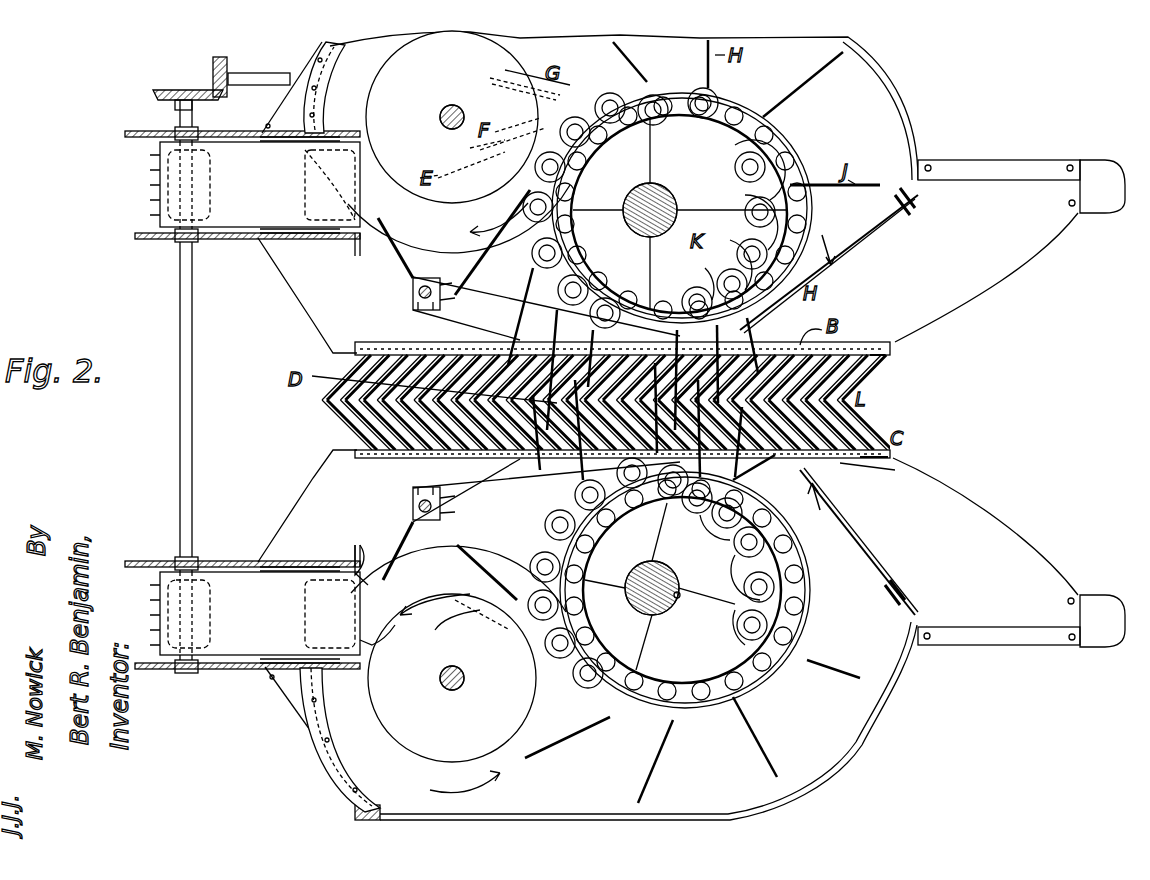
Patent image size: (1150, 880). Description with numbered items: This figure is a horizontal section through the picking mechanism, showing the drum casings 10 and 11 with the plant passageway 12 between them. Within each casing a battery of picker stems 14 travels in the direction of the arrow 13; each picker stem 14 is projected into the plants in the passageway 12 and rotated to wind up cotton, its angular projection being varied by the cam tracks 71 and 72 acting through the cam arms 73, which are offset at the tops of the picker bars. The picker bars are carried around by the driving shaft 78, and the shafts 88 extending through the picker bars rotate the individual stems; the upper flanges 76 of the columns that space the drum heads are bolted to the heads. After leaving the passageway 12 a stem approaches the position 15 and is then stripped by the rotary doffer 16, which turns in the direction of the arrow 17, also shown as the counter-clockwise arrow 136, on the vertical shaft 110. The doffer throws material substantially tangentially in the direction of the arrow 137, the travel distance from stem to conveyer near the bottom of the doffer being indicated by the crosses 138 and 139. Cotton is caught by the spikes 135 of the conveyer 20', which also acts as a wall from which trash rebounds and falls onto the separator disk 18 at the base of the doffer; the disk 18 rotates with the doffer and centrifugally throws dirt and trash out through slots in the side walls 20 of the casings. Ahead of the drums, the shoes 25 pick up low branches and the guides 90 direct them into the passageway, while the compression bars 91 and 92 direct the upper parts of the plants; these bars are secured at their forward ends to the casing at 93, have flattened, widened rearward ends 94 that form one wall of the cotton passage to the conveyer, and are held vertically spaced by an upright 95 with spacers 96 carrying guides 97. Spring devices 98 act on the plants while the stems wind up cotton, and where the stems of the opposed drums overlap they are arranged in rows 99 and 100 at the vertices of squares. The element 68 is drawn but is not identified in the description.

The drum casing 10 is at (905, 100).
The drum casing 11 is at (880, 738).
The passageway 12 is at (893, 402).
The arrow 13 is at (834, 250).
The picker stem 14 is at (815, 80).
The position 15 is at (478, 262).
The rotary doffer 16 is at (452, 396).
The arrow 17 is at (430, 787).
The separator disk 18 is at (320, 50).
The side walls 20 is at (378, 431).
The conveyer 20' is at (255, 398).
The shoes 25 is at (1098, 215).
The rollers 68 is at (760, 125).
The cam track 71 is at (800, 140).
The cam track 72 is at (735, 120).
The cam arms 73 is at (715, 140).
The upper flange 76 is at (668, 98).
The driving shaft 78 is at (660, 197).
The shafts 88 is at (745, 590).
The guides 90 is at (1000, 278).
The compression bar 91 is at (858, 283).
The compression bar 92 is at (875, 548).
The forward end attachment 93 is at (900, 200).
The flattened rearward ends 94 is at (440, 322).
The upright 95 is at (418, 292).
The spacers 96 is at (432, 290).
The guides 97 is at (392, 244).
The spring devices 98 is at (880, 358).
The vertical row of picker stems 99 is at (840, 464).
The row of picker stems 100 is at (890, 458).
The vertical shaft 110 is at (455, 105).
The conveyer spikes 135 is at (372, 160).
The arrow 136 is at (439, 625).
The arrow 137 is at (428, 600).
The cross 138 is at (476, 620).
The cross 139 is at (352, 553).